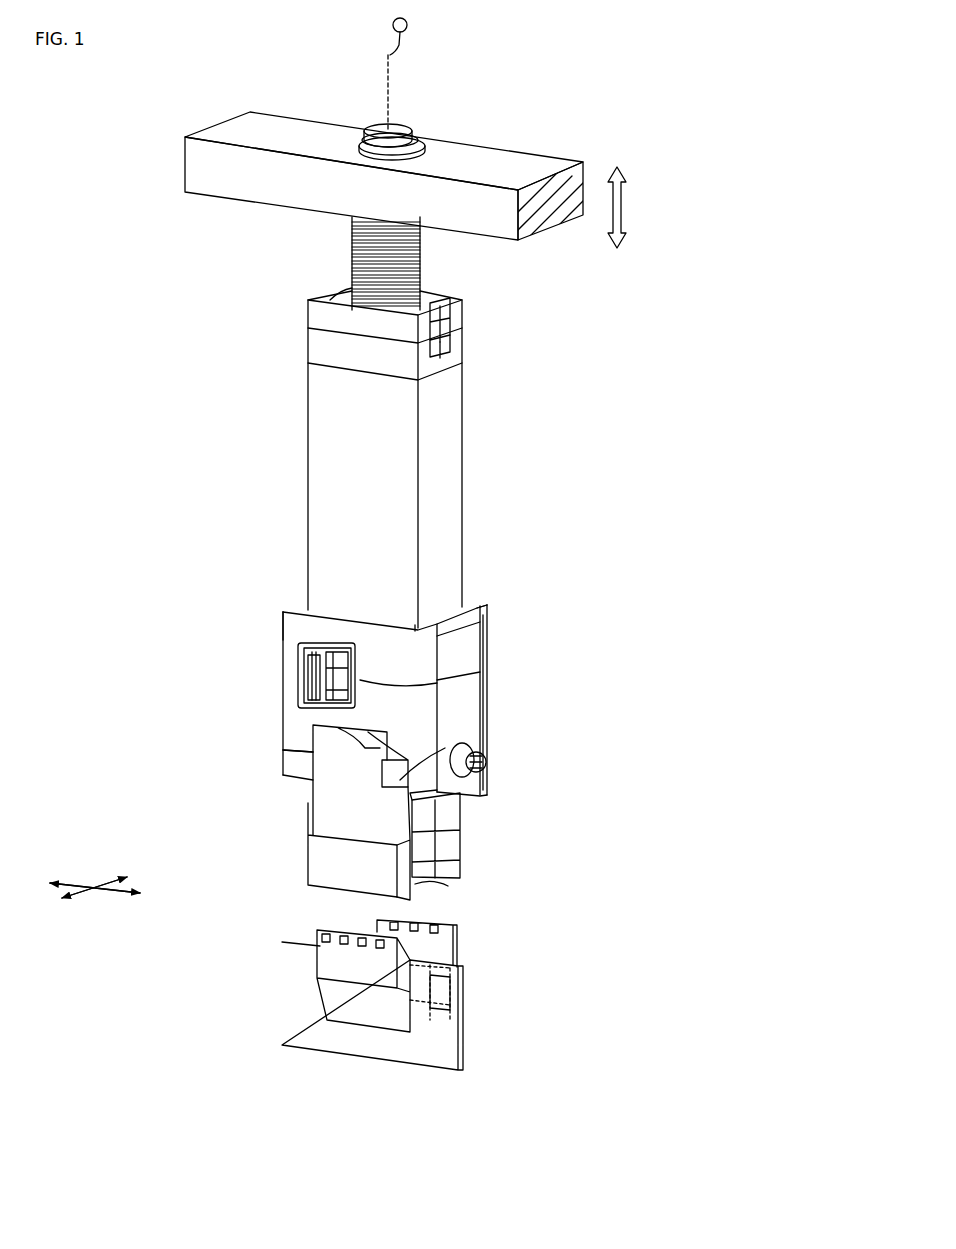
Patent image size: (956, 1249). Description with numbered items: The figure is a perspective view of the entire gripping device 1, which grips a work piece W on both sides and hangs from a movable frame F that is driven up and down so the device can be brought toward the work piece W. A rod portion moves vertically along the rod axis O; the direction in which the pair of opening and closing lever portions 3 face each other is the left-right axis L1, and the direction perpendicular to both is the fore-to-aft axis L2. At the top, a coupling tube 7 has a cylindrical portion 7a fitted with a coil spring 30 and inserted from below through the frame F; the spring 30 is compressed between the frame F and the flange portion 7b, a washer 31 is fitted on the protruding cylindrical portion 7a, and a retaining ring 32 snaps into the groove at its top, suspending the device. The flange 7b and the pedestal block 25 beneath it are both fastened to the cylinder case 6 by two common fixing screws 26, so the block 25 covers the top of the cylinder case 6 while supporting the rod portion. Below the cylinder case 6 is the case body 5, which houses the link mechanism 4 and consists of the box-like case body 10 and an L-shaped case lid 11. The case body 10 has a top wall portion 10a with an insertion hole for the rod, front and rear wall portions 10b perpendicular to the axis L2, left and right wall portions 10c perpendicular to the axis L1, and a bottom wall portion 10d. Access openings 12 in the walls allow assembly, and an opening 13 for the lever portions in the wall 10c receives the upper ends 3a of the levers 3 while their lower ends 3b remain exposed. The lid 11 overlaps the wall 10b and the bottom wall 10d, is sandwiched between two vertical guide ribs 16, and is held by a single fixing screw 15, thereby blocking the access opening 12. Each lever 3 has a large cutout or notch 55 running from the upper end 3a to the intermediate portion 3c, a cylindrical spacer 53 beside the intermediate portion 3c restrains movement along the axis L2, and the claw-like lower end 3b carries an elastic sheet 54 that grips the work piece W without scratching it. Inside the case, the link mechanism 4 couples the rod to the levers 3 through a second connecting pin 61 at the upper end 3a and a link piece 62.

The clamping device 1 is at (667, 348).
The opening and closing lever portion 3 is at (375, 878).
The upper end of opening and closing lever portion 3a is at (345, 664).
The lower end of opening and closing lever portion 3b is at (318, 870).
The intermediate portion of opening and closing lever portion 3c is at (313, 800).
The link mechanism 4 is at (302, 682).
The case body (housing) 5 is at (398, 680).
The cylinder case 6 is at (450, 488).
The coupling tube 7 is at (470, 304).
The cylindrical portion 7a is at (392, 128).
The flange portion 7b is at (460, 316).
The case body 10 is at (387, 680).
The top wall portion 10a is at (300, 608).
The front and rear wall portion 10b is at (485, 604).
The left and right wall portion 10c is at (437, 683).
The bottom wall portion 10d is at (283, 776).
The case lid 11 is at (500, 641).
The access opening 12 is at (300, 700).
The opening for lever portions 13 is at (287, 750).
The fixing screw 15 is at (488, 762).
The guide rib 16 is at (480, 668).
The pedestal block 25 is at (322, 352).
The fixing screw 26 is at (340, 297).
The coil spring 30 is at (420, 272).
The washer 31 is at (414, 148).
The retaining ring 32 is at (405, 140).
The cylindrical spacer 53 is at (450, 738).
The elastic sheet 54 is at (437, 885).
The cutout or notch 55 is at (368, 732).
The second connecting pin 61 is at (300, 650).
The recess 62 is at (314, 665).
The movable frame F is at (535, 153).
The work piece W is at (464, 1056).
The rod axis O is at (397, 74).
The left-right axis L1 is at (88, 896).
The fore-to-aft axis L2 is at (75, 882).